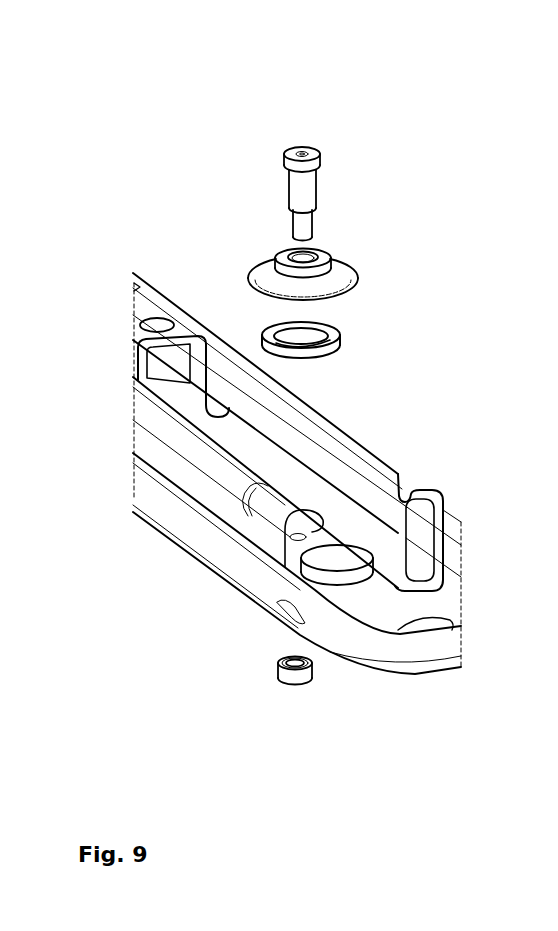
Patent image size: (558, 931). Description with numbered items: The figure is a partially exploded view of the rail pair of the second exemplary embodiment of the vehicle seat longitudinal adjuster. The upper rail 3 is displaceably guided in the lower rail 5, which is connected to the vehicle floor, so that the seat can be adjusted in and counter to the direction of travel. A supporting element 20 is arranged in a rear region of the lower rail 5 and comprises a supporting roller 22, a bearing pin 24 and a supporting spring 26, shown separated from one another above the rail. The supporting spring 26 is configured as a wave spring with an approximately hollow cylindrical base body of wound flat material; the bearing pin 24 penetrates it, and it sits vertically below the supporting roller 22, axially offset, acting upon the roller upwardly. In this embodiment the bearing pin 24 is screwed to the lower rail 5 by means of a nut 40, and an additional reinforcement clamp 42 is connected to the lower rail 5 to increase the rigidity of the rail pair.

The supporting element 20 is at (226, 156).
The upper rail 3 is at (148, 305).
The lower rail 5 is at (357, 443).
The supporting roller 22 is at (346, 268).
The bearing pin 24 is at (314, 182).
The supporting spring 26 is at (337, 345).
The nut 40 is at (293, 677).
The reinforcement clamp 42 is at (273, 591).